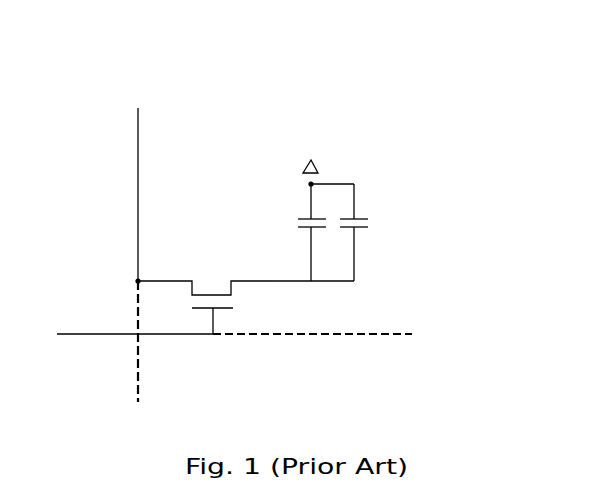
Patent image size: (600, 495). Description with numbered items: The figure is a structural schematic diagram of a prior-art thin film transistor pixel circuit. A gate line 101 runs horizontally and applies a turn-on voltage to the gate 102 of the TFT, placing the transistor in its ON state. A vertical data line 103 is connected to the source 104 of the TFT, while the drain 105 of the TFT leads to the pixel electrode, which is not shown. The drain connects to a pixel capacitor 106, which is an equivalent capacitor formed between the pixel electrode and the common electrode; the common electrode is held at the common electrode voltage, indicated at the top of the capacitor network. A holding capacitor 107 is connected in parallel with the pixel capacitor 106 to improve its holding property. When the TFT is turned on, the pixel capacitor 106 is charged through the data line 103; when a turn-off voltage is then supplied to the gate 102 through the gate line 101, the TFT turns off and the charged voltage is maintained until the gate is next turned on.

The gate line 101 is at (352, 375).
The gate 102 is at (233, 348).
The data line 103 is at (182, 242).
The source 104 is at (135, 307).
The drain 105 is at (333, 335).
The pixel capacitor 106 is at (353, 164).
The holding capacitor 107 is at (382, 218).